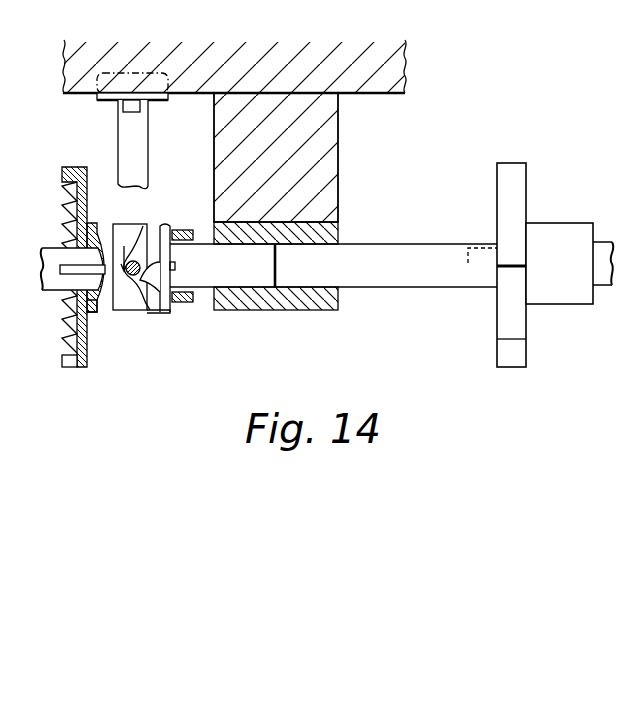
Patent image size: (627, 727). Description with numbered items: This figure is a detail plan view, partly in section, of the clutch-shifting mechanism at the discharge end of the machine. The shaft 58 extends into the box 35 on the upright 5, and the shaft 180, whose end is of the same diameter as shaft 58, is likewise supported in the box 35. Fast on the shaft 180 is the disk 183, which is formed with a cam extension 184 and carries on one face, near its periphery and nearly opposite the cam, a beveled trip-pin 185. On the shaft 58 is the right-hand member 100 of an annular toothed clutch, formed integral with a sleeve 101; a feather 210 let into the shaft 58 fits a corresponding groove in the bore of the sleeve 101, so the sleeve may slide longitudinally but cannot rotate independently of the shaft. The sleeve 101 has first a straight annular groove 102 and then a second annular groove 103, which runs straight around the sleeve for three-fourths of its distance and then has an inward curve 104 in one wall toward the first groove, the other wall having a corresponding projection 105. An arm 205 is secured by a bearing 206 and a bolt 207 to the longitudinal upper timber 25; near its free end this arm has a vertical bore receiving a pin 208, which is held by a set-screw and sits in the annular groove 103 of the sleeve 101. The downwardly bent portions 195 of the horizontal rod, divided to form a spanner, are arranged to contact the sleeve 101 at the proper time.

The longitudinal upper timber 25 is at (378, 96).
The upright 5 is at (311, 172).
The bearing 206 is at (110, 104).
The bolt 207 is at (147, 111).
The arm 205 is at (148, 151).
The box 35 is at (309, 311).
The shaft 180 is at (393, 243).
The shaft 58 is at (259, 253).
The disk 183 is at (505, 203).
The cam extension 184 is at (520, 328).
The beveled trip-pin 185 is at (492, 283).
The right-hand clutch member 100 is at (80, 371).
The sleeve 101 is at (89, 224).
The straight annular groove 102 is at (105, 312).
The feather 210 is at (72, 270).
The inward curve 104 is at (135, 288).
The pin 208 is at (134, 261).
The projection 105 is at (141, 277).
The annular groove 103 is at (153, 313).
The downward portion 195 is at (183, 229).